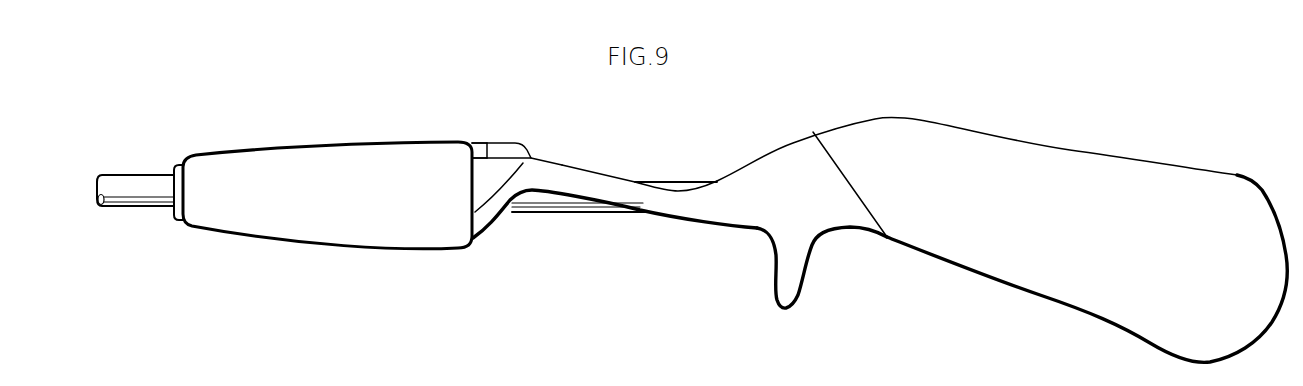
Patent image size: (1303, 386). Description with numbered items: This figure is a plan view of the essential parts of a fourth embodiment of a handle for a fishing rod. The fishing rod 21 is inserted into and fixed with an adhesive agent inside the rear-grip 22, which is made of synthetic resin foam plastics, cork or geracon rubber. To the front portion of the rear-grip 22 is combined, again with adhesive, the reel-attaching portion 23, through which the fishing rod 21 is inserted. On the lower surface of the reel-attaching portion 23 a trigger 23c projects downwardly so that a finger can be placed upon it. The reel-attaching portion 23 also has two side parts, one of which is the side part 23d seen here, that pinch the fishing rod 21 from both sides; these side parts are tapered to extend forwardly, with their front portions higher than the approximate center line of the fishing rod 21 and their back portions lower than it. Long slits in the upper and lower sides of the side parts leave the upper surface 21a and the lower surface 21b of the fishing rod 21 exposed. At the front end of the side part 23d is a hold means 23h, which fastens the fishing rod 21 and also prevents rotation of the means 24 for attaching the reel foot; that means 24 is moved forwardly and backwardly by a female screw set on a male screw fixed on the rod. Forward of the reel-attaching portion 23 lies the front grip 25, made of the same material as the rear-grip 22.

The fishing rod 21 is at (120, 175).
The upper surface of the fishing rod 21a is at (668, 181).
The lower surface of the fishing rod 21b is at (562, 215).
The rear-grip 22 is at (1135, 160).
The reel-attaching portion 23 is at (562, 162).
The trigger 23c is at (795, 288).
The side part 23d is at (608, 182).
The hold means 23h is at (487, 155).
The means for attaching the reel-foot 24 is at (507, 146).
The grip handle 25 is at (282, 148).